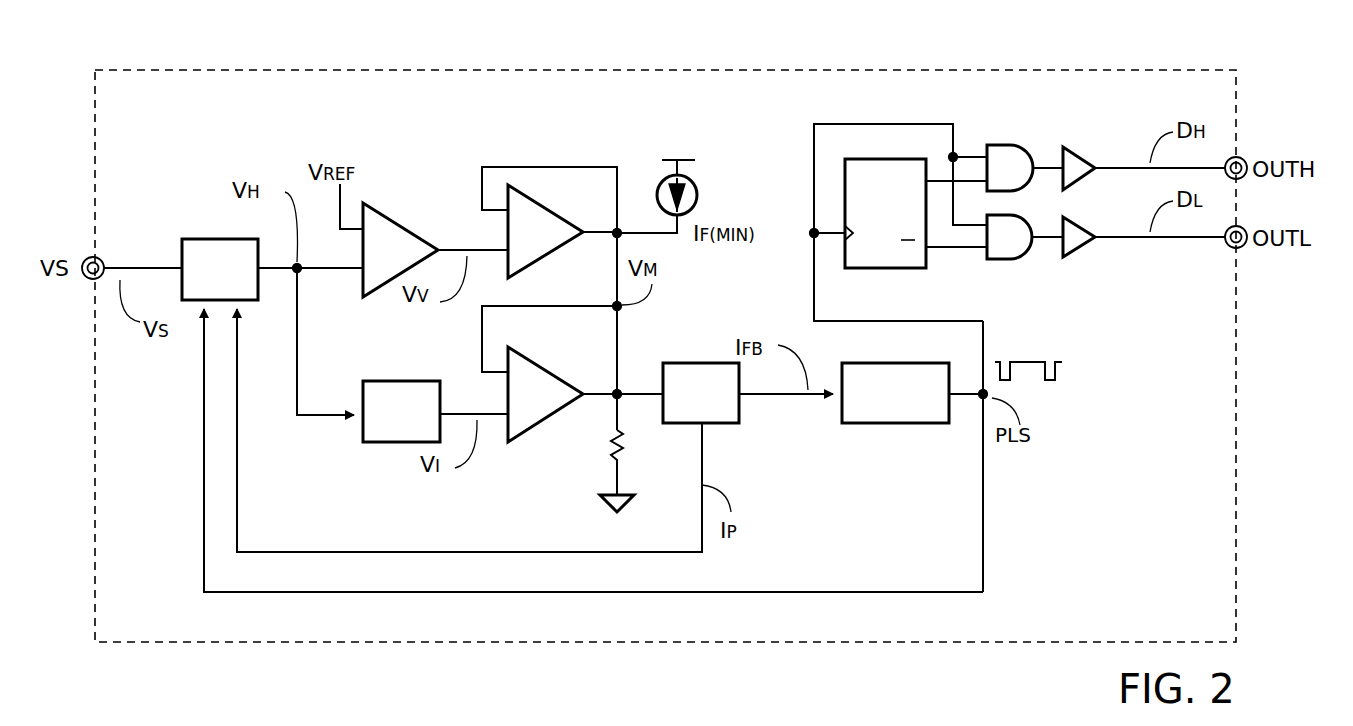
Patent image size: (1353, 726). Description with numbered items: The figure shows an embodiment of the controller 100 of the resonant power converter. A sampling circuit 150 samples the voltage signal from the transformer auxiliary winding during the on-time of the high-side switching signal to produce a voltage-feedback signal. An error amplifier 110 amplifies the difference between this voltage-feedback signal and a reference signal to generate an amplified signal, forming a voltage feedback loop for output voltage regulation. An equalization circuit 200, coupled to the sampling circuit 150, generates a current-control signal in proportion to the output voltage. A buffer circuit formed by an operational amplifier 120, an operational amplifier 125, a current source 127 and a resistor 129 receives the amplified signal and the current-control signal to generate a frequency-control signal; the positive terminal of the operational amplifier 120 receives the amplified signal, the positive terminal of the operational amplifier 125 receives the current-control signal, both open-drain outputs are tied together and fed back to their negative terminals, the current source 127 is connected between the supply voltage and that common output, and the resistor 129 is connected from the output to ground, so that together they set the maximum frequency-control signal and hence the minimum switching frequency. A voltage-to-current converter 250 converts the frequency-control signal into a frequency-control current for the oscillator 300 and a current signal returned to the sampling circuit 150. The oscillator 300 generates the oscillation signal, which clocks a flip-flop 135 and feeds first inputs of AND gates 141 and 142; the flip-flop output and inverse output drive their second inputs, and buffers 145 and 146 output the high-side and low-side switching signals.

The controller 100 is at (1166, 70).
The error amplifier 110 is at (382, 210).
The operational amplifier 120 is at (548, 258).
The operational amplifier 125 is at (540, 424).
The current source 127 is at (700, 197).
The resistor 129 is at (632, 443).
The flip-flop 135 is at (880, 268).
The AND gate 141 is at (1003, 145).
The AND gate 142 is at (1003, 259).
The buffer 145 is at (1080, 155).
The buffer 146 is at (1080, 255).
The sampling circuit 150 is at (223, 239).
The equalization circuit 200 is at (400, 381).
The voltage-to-current converter 250 is at (720, 423).
The oscillator 300 is at (885, 423).